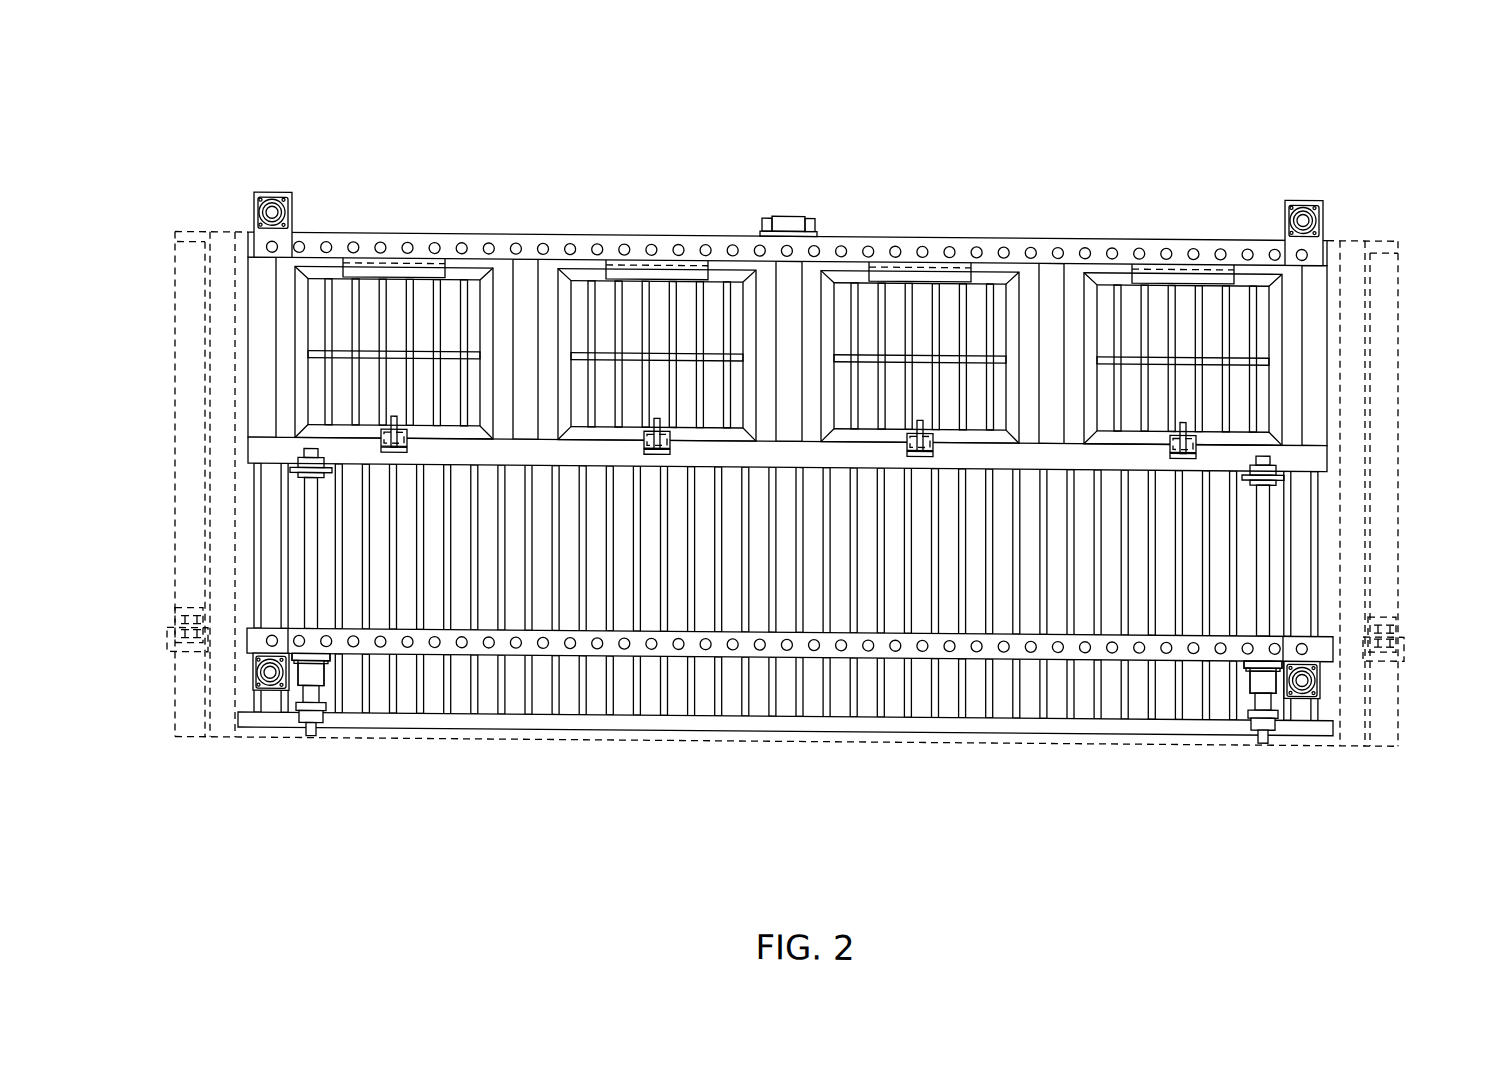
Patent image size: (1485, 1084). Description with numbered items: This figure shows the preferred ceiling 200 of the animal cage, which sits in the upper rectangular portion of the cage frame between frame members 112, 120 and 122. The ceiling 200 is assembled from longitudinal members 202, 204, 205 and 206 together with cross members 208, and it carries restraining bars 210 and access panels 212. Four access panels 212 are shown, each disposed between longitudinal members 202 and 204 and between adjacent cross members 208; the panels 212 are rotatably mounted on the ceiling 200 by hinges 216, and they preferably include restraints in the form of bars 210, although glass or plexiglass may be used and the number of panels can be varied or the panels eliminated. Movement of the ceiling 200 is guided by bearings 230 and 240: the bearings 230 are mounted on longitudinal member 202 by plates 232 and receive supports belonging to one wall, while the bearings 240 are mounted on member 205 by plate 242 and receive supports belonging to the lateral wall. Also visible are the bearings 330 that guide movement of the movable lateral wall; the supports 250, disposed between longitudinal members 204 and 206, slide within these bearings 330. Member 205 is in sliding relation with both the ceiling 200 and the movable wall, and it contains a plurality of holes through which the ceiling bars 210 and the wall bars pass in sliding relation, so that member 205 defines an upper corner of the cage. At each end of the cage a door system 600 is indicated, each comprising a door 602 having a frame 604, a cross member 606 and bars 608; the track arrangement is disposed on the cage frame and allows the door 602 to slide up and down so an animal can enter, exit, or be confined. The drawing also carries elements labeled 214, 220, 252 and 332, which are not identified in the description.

The ceiling 200 is at (781, 148).
The longitudinal member 202 is at (828, 233).
The longitudinal member 204 is at (763, 463).
The longitudinal member 205 is at (747, 646).
The longitudinal member 206 is at (547, 717).
The cross member 208 is at (516, 328).
The bar 210 is at (882, 700).
The access panel 212 is at (982, 286).
The mounting slot 214 is at (905, 265).
The hinge 216 is at (935, 432).
The top bracket 220 is at (783, 211).
The bearing 230 is at (287, 203).
The plate 232 is at (273, 192).
The bearing 240 is at (270, 676).
The plate 242 is at (258, 650).
The support 250 is at (313, 561).
The shaft coupling 252 is at (300, 467).
The bearing 330 is at (318, 680).
The mounting flange 332 is at (332, 658).
The door system 600 is at (797, 490).
The door 602 is at (1400, 306).
The frame 604 is at (187, 296).
The cross member 606 is at (178, 232).
The bar 608 is at (190, 616).
The member 112 is at (1096, 734).
The member 120 is at (1352, 241).
The member 122 is at (217, 726).